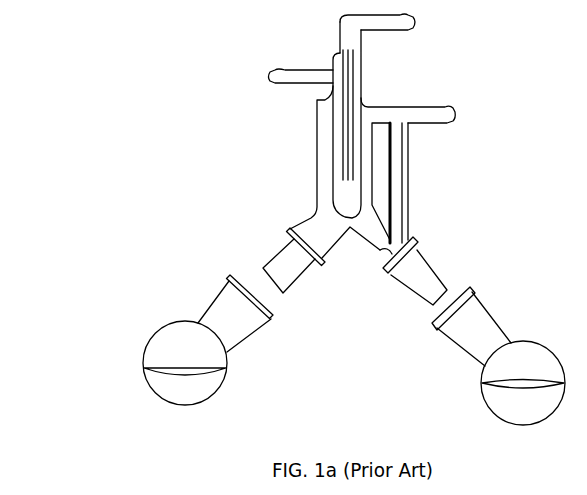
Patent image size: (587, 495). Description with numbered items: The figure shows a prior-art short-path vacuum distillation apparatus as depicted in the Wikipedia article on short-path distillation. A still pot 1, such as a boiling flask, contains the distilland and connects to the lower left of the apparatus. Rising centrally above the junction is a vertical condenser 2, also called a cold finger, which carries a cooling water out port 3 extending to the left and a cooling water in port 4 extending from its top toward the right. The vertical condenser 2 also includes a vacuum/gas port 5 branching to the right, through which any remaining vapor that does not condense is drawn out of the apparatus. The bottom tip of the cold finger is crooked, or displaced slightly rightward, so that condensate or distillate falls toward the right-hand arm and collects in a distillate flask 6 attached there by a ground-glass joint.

The still pot 1 is at (208, 340).
The vertical condenser 2 is at (355, 163).
The cooling water out port 3 is at (268, 76).
The cooling water in port 4 is at (423, 25).
The vacuum/gas port 5 is at (455, 115).
The distillate flask 6 is at (498, 356).